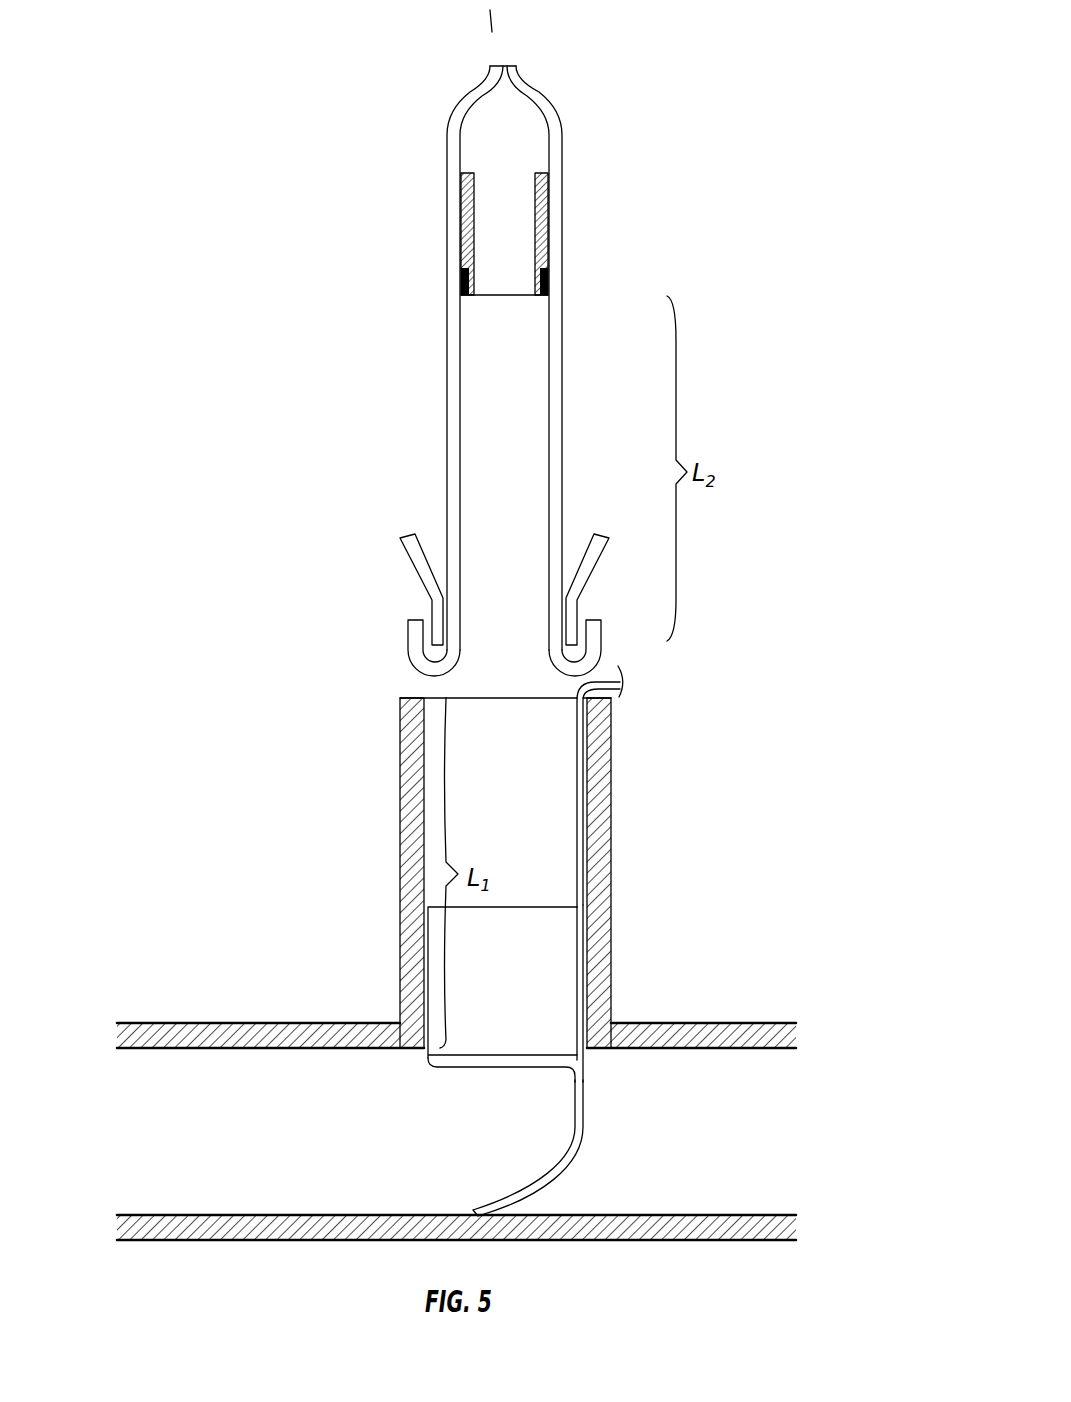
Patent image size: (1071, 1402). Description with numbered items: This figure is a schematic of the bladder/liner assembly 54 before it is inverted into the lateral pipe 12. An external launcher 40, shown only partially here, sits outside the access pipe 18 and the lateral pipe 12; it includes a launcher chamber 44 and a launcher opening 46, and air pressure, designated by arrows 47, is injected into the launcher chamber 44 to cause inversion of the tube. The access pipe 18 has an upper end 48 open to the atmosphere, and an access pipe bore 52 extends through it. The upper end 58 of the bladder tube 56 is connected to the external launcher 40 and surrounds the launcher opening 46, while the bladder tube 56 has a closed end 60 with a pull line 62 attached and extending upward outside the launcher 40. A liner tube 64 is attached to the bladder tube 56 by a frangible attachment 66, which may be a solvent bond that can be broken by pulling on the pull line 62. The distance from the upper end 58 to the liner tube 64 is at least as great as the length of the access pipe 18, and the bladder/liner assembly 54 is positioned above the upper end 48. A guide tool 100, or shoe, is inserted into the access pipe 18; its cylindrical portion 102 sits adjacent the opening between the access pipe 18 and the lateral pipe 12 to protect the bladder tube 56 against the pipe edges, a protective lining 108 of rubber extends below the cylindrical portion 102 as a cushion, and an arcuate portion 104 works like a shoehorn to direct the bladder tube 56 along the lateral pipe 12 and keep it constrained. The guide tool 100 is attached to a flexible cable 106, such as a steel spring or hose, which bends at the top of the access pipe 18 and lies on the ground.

The lateral pipe 12 is at (295, 1022).
The access pipe 18 is at (473, 870).
The external launcher 40 is at (494, 369).
The launcher chamber 44 is at (585, 490).
The launcher opening 46 is at (563, 618).
The air pressure arrows 47 is at (435, 553).
The upper end of access pipe 48 is at (400, 723).
The access pipe bore 52 is at (425, 915).
The bladder/liner assembly 54 is at (444, 272).
The bladder tube 56 is at (437, 358).
The upper end of bladder 58 is at (444, 677).
The closed end 60 is at (513, 39).
The pull line 62 is at (504, 66).
The liner tube 64 is at (540, 255).
The frangible attachment 66 is at (462, 286).
The guide tool 100 is at (513, 941).
The cylindrical portion 102 is at (583, 963).
The arcuate portion 104 is at (582, 1118).
The flexible cable 106 is at (576, 778).
The protective lining 108 is at (457, 1068).